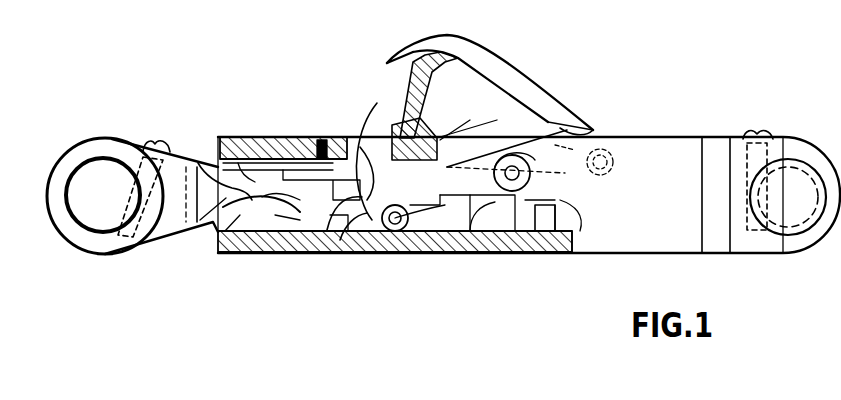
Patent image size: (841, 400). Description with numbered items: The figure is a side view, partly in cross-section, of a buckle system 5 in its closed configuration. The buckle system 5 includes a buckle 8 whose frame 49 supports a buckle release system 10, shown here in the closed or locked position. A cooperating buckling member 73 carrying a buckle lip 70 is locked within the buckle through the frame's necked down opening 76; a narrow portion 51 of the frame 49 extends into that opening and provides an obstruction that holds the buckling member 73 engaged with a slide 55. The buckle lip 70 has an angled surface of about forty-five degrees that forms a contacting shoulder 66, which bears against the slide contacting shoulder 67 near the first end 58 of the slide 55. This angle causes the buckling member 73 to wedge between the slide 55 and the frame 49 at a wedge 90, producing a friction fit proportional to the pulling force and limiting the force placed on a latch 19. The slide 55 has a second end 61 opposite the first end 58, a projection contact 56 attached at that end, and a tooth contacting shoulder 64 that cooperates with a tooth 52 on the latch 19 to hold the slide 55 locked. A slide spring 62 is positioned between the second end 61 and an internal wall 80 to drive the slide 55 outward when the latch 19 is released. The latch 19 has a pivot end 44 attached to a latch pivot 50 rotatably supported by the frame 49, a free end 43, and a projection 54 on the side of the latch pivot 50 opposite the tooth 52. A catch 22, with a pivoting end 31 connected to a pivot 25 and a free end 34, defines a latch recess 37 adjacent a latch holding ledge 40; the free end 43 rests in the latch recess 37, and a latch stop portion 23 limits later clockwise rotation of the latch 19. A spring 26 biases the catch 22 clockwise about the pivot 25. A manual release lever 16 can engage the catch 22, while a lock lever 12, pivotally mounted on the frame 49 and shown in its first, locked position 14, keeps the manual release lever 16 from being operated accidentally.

The buckle system 5 is at (198, 96).
The buckle 8 is at (665, 66).
The buckle release system 10 is at (562, 61).
The lock lever 12 is at (418, 50).
The first, locked position 14 is at (522, 64).
The manual release lever 16 is at (400, 100).
The latch 19 is at (560, 126).
The catch 22 is at (332, 252).
The latch stop portion 23 is at (450, 125).
The pivot 25 is at (450, 252).
The spring 26 is at (470, 252).
The pivoting end 31 is at (420, 240).
The free end 34 is at (430, 122).
The latch recess 37 is at (356, 169).
The latch holding ledge 40 is at (395, 232).
The free end 43 is at (474, 121).
The pivot end 44 is at (568, 135).
The frame 49 is at (233, 137).
The latch pivot 50 is at (520, 173).
The narrow portion 51 is at (336, 145).
The tooth 52 is at (508, 252).
The projection 54 is at (584, 179).
The slide 55 is at (225, 218).
The projection contact 56 is at (492, 214).
The first end 58 is at (200, 220).
The second end 61 is at (568, 252).
The slide spring 62 is at (585, 252).
The tooth contacting shoulder 64 is at (545, 252).
The contacting shoulder 66 is at (219, 164).
The slide contacting shoulder 67 is at (265, 231).
The buckle lip 70 is at (300, 145).
The cooperating buckling member 73 is at (80, 152).
The necked down opening 76 is at (252, 145).
The internal wall 80 is at (565, 220).
The wedge 90 is at (282, 205).